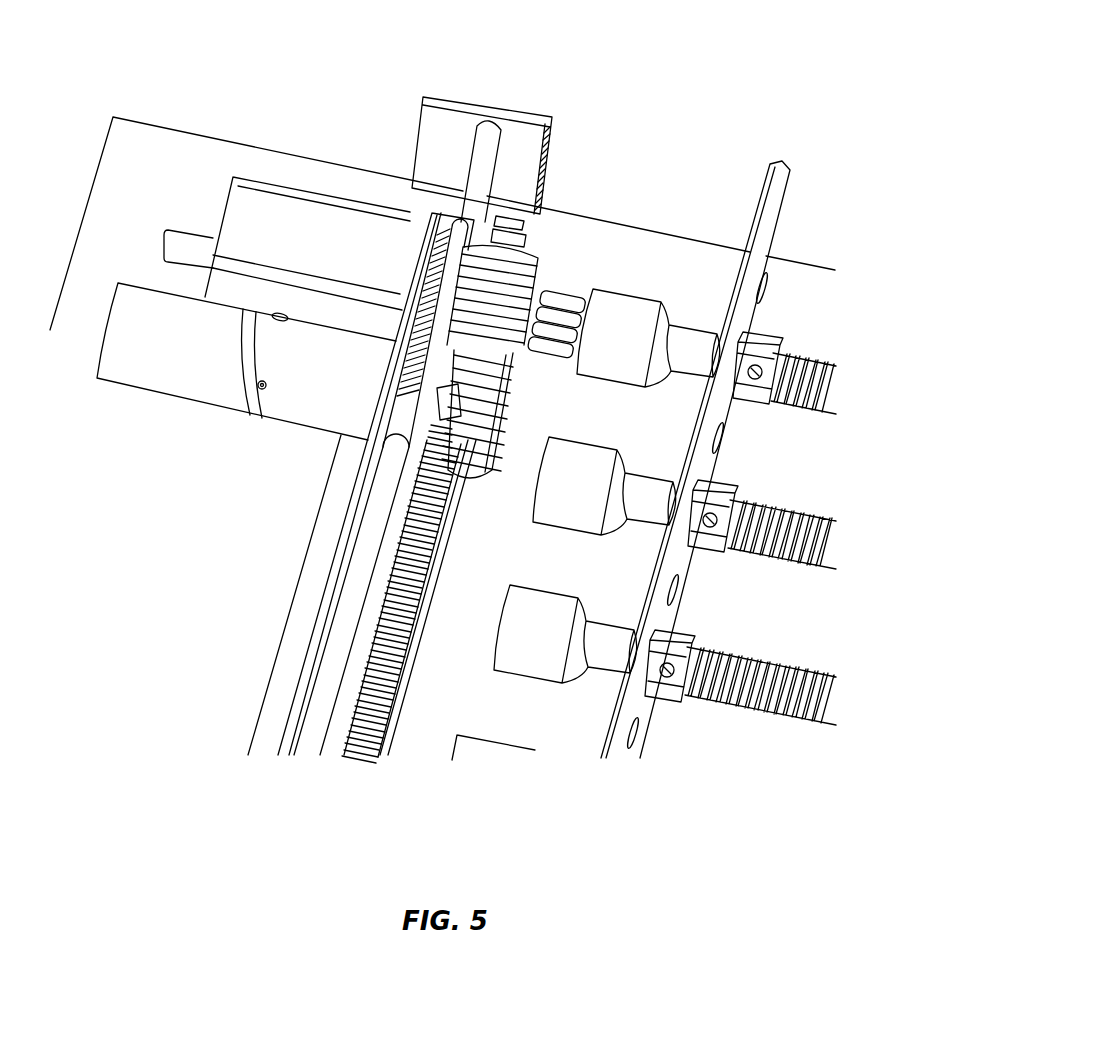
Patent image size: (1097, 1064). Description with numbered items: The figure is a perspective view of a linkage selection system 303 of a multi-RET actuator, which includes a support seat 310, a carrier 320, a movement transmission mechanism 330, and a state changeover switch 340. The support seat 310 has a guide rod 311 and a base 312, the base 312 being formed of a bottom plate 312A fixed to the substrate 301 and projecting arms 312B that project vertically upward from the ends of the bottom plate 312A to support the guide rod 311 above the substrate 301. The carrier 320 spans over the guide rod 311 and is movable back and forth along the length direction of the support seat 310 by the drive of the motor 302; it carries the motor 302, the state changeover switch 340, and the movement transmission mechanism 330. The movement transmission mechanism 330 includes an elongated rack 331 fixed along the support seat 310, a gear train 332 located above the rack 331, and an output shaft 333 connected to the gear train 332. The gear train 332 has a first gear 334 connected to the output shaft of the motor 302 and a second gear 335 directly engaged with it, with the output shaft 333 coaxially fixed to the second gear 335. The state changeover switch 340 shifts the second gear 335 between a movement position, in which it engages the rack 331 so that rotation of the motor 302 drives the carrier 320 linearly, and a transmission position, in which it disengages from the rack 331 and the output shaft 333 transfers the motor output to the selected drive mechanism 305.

The substrate 301 is at (125, 138).
The motor 302 is at (178, 313).
The linkage selection system 303 is at (325, 76).
The drive mechanism 305 is at (803, 353).
The support seat 310 is at (440, 107).
The guide rod 311 is at (486, 140).
The base 312 is at (275, 665).
The bottom plate 312A is at (320, 620).
The projecting arm 312B is at (517, 162).
The carrier 320 is at (432, 215).
The movement transmission mechanism 330 is at (440, 403).
The rack 331 is at (375, 658).
The gear train 332 is at (516, 413).
The output shaft 333 is at (552, 322).
The first gear 334 is at (472, 448).
The second gear 335 is at (507, 277).
The state changeover switch 340 is at (238, 233).